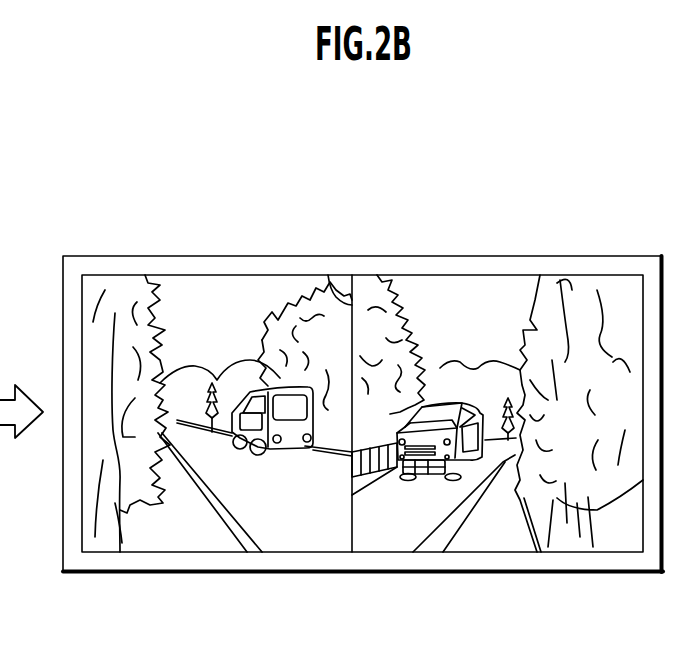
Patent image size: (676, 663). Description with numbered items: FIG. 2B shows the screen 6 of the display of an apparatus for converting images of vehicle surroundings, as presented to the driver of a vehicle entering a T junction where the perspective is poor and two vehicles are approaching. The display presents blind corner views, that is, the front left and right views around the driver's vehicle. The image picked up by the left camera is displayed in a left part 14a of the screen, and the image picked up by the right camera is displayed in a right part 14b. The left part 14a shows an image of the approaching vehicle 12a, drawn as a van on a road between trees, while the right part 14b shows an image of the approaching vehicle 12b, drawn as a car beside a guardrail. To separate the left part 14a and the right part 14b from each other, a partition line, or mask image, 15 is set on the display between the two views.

The display screen 6 is at (623, 258).
The vehicle 12a is at (250, 388).
The vehicle 12b is at (446, 403).
The left part 14a is at (345, 587).
The right part 14b is at (643, 587).
The partition line 15 is at (330, 285).